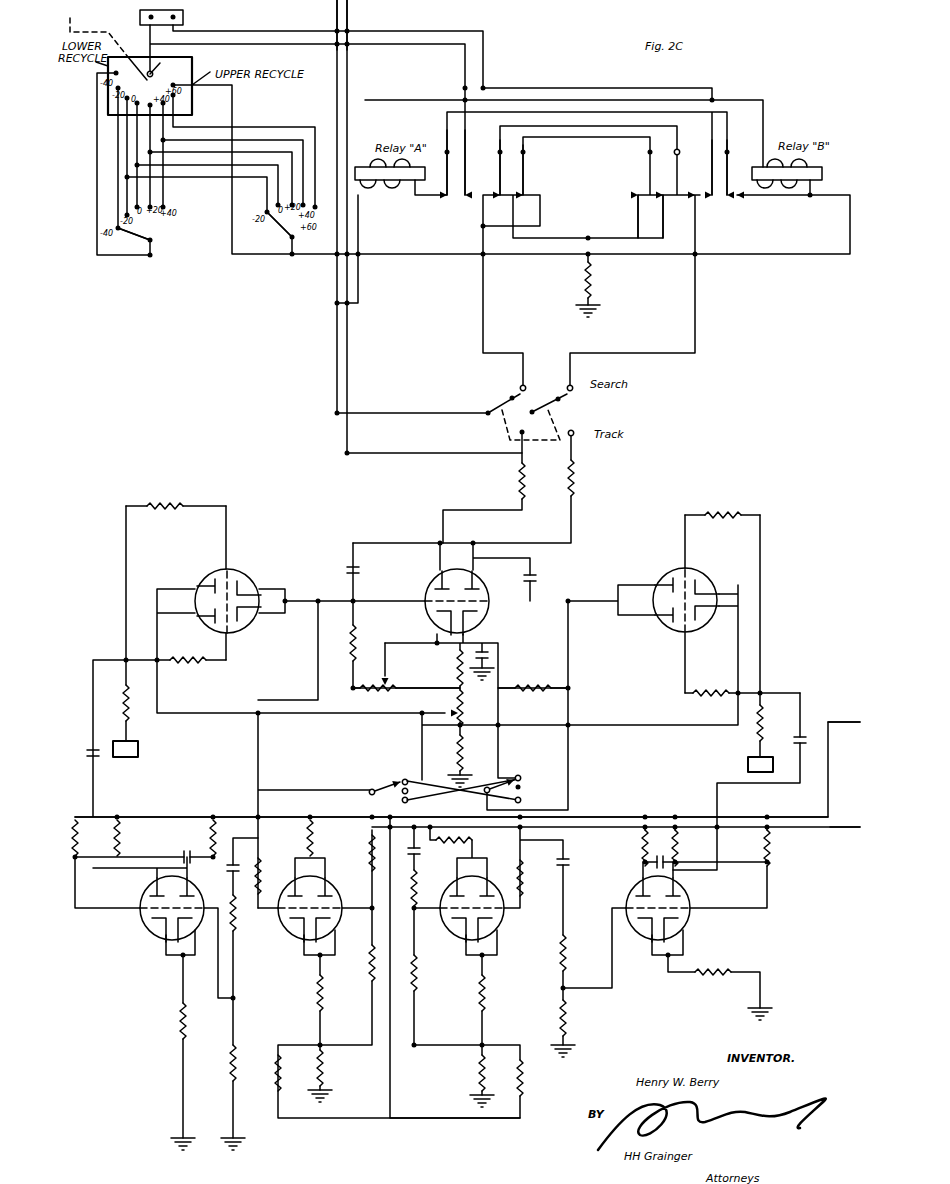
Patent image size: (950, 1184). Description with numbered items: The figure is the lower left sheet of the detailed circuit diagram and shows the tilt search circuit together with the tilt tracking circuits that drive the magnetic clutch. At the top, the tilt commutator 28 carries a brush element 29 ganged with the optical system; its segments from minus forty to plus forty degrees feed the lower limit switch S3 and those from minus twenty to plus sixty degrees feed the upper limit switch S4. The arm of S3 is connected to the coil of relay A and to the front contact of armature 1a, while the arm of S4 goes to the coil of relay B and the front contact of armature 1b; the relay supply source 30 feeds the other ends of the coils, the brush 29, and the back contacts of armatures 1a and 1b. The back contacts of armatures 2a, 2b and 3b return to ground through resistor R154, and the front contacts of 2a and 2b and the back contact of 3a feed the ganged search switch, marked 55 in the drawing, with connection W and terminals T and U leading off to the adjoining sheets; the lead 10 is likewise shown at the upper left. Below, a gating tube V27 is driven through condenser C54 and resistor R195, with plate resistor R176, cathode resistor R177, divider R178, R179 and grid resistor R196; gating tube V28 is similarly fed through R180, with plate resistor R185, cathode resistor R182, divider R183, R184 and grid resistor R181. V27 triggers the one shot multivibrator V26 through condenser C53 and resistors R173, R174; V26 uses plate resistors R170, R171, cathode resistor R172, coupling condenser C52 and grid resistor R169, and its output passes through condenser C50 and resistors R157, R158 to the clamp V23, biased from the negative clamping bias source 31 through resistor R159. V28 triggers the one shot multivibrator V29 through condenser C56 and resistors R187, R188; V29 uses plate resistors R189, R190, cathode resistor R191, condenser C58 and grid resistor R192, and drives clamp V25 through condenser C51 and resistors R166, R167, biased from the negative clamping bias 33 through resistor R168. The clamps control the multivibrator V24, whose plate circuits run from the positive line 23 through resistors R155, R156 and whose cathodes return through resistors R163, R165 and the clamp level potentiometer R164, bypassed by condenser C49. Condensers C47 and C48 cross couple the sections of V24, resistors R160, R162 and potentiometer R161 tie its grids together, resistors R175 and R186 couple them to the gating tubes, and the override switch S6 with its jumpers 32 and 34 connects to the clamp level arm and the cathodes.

The lead line 10 is at (73, 8).
The relay supply source 30 is at (183, 18).
The tilt commutator 28 is at (200, 56).
The brush element 29 is at (160, 64).
The lower limit switch S3 is at (147, 234).
The upper limit switch S4 is at (296, 227).
The terminal W lines W is at (351, 25).
The armature 1a of relay A 1a is at (455, 162).
The armature 2a of relay A 2a is at (508, 167).
The armature 3a of relay A 3a is at (531, 170).
The armature 3b of relay B 3b is at (646, 194).
The armature 2b of relay B 2b is at (678, 193).
The armature 1b of relay B 1b is at (729, 167).
The resistor R-154 R154 is at (604, 285).
The search-track switch 55 is at (546, 412).
The resistor R-155 R155 is at (502, 498).
The resistor R-156 R156 is at (481, 489).
The resistor R-157 R157 is at (176, 497).
The clamp V-23 V23 is at (240, 582).
The resistor R-158 R158 is at (191, 668).
The resistor R-159 R159 is at (142, 700).
The negative clamping bias source 31 is at (138, 749).
The condenser C-50 C50 is at (97, 760).
The condenser C-47 C47 is at (364, 570).
The multivibrator V-24 V24 is at (478, 582).
The condenser C-48 C48 is at (542, 578).
The resistor R-160 R160 is at (340, 645).
The potentiometer R-161 R161 is at (406, 674).
The resistor R-162 R162 is at (533, 696).
The resistor R-163 R163 is at (442, 668).
The condenser C-49 C49 is at (490, 656).
The clamp level resistor (potentiometer) R-164 R164 is at (476, 708).
The resistor R-165 R165 is at (471, 761).
The jumper of override switch S-6 32 is at (425, 782).
The jumper of switch S-6 34 is at (440, 800).
The override switch S6 is at (520, 770).
The condenser C-54 C54 is at (398, 828).
The resistor R-166 R166 is at (722, 505).
The clamp V-25 V25 is at (698, 580).
The resistor R-167 R167 is at (742, 701).
The resistor R-168 R168 is at (740, 725).
The negative clamping bias 33 is at (748, 764).
The condenser C-51 C51 is at (787, 742).
The terminal T is at (844, 715).
The terminal U is at (845, 820).
The positive 280 volt line 23 is at (780, 814).
The resistor R-169 R169 is at (70, 830).
The resistor R-170 R170 is at (133, 838).
The resistor R-171 R171 is at (195, 838).
The condenser C-52 C52 is at (175, 862).
The condenser C-53 C53 is at (219, 874).
The one shot multivibrator V-26 V26 is at (142, 922).
The resistor R-172 R172 is at (195, 1076).
The resistor R-173 R173 is at (251, 914).
The resistor R-174 R174 is at (246, 1097).
The resistor R-175 R175 is at (275, 873).
The resistor R-176 R176 is at (326, 838).
The gating tube V-27 V27 is at (328, 892).
The resistor R-177 R177 is at (338, 993).
The resistor R-179 R179 is at (335, 1076).
The resistor R-178 R178 is at (294, 1073).
The resistor R-195 R195 is at (356, 853).
The resistor R-196 R196 is at (356, 963).
The resistor R-180 R180 is at (430, 888).
The resistor R-181 R181 is at (431, 973).
The resistor R-185 R185 is at (454, 848).
The gating tube V-28 V28 is at (488, 892).
The resistor R-186 R186 is at (536, 878).
The resistor R-182 R182 is at (500, 993).
The resistor R-183 R183 is at (495, 1081).
The resistor R-184 R184 is at (539, 1078).
The condenser C-56 C56 is at (578, 862).
The resistor R-187 R187 is at (582, 953).
The resistor R-188 R188 is at (578, 1028).
The resistor R-189 R189 is at (630, 848).
The resistor R-190 R190 is at (691, 848).
The resistor R-192 R192 is at (784, 848).
The condenser C-58 C58 is at (642, 867).
The one shot multivibrator V-29 V29 is at (684, 898).
The resistor R-191 R191 is at (733, 986).